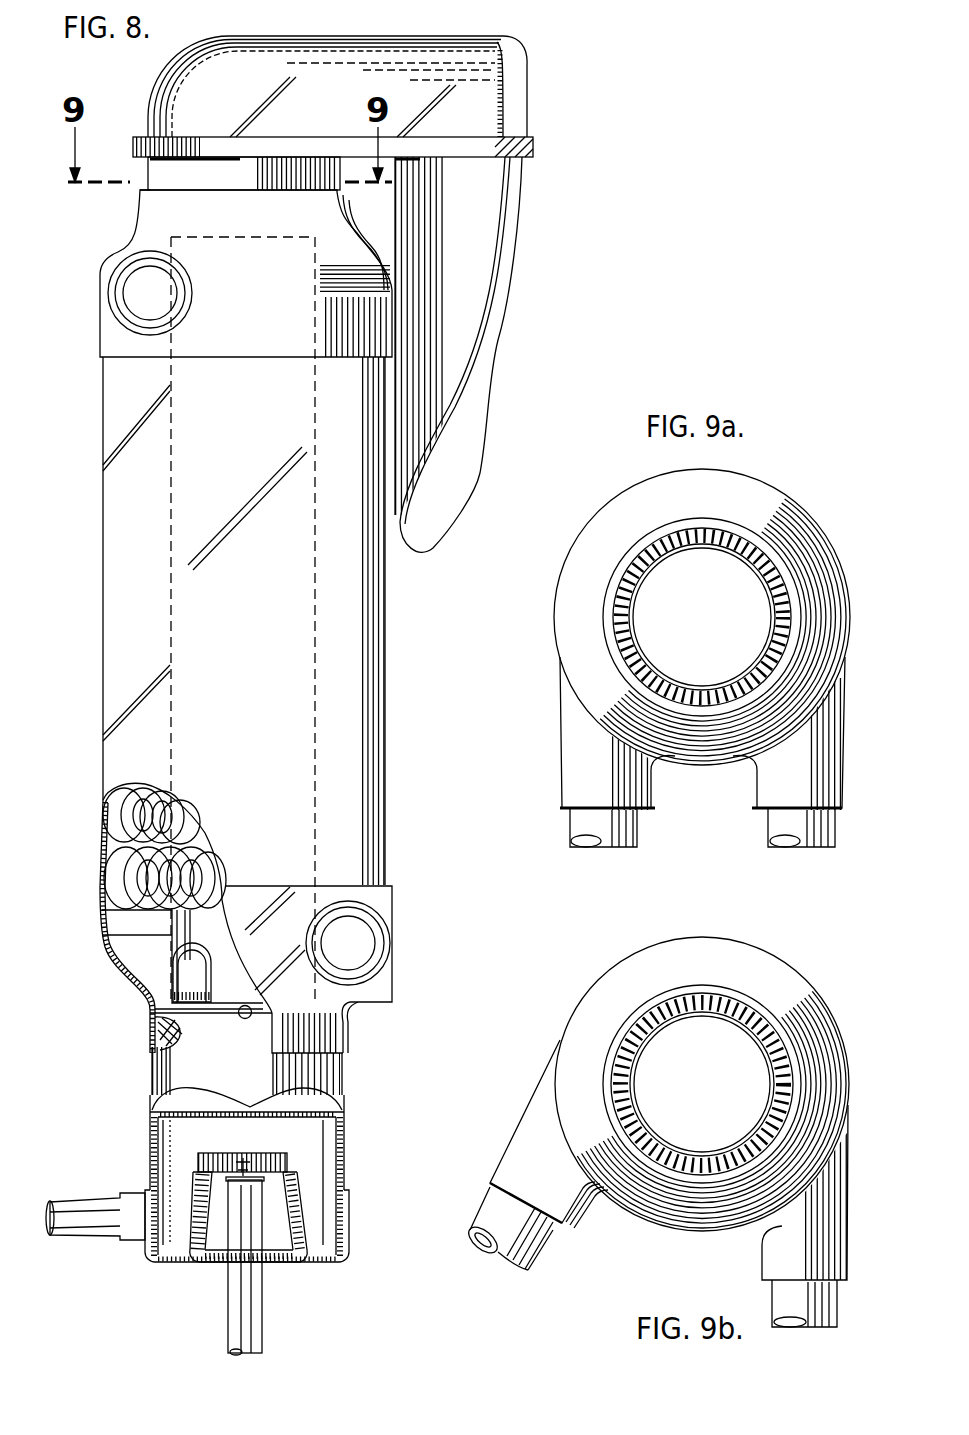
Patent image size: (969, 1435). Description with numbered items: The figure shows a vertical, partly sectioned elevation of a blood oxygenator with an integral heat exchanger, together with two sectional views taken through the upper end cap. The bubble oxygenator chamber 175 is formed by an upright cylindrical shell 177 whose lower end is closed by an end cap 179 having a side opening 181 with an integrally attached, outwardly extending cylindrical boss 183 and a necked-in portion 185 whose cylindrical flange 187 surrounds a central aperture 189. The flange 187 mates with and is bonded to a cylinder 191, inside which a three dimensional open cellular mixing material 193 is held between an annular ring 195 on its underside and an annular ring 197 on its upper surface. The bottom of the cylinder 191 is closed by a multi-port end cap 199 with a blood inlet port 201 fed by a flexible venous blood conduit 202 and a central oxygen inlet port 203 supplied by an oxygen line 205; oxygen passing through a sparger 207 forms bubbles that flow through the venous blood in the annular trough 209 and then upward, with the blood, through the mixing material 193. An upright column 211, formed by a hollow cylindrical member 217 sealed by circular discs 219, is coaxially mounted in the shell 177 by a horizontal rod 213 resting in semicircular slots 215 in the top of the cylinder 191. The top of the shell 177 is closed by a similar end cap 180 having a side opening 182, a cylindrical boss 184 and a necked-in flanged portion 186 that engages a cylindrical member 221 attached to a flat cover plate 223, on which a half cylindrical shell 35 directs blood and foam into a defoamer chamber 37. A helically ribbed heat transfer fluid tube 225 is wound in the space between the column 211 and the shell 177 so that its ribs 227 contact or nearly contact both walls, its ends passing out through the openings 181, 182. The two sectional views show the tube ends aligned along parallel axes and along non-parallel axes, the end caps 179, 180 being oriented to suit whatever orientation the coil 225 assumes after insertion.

In FIG. 8, the half cylindrical shell 35 is at (374, 36).
In FIG. 8, the defoamer chamber 37 is at (480, 362).
In FIG. 8, the bubble oxygenator chamber 175 is at (105, 862).
In FIG. 8, the cylindrical shell 177 is at (387, 672).
In FIG. 8, the end cap 179 is at (394, 906).
In FIG. 8, the end cap 180 is at (100, 322).
In FIG. 9a, the end cap 180 is at (560, 605).
In FIG. 9b, the end cap 180 is at (652, 940).
In FIG. 8, the side opening 181 is at (378, 942).
In FIG. 8, the side opening 182 is at (116, 295).
In FIG. 8, the cylindrical boss 183 is at (394, 950).
In FIG. 9a, the cylindrical boss 183 is at (842, 765).
In FIG. 9b, the cylindrical boss 183 is at (850, 1230).
In FIG. 8, the cylindrical boss 184 is at (118, 332).
In FIG. 9a, the cylindrical boss 184 is at (560, 765).
In FIG. 9b, the cylindrical boss 184 is at (508, 1147).
In FIG. 8, the necked-in portion 185 is at (346, 1000).
In FIG. 8, the necked-in flanged portion 186 is at (134, 244).
In FIG. 8, the cylindrical flange 187 is at (348, 1042).
In FIG. 8, the central aperture 189 is at (152, 1062).
In FIG. 8, the cylinder 191 is at (343, 1075).
In FIG. 8, the open cellular mixing material 193 is at (285, 1110).
In FIG. 8, the annular ring 195 is at (344, 1130).
In FIG. 8, the annular ring 197 is at (163, 1006).
In FIG. 8, the multi-port end cap 199 is at (350, 1250).
In FIG. 8, the blood inlet port 201 is at (158, 1220).
In FIG. 8, the flexible venous blood conduit 202 is at (100, 1243).
In FIG. 8, the oxygen inlet port 203 is at (240, 1160).
In FIG. 8, the oxygen line 205 is at (260, 1326).
In FIG. 8, the sparger 207 is at (291, 1156).
In FIG. 8, the annular trough 209 is at (322, 1240).
In FIG. 8, the upright column 211 is at (162, 936).
In FIG. 9a, the upright column 211 is at (720, 611).
In FIG. 9b, the upright column 211 is at (723, 1085).
In FIG. 8, the horizontal rod 213 is at (238, 1014).
In FIG. 8, the semicircular slots 215 is at (248, 1015).
In FIG. 8, the hollow cylindrical member 217 is at (128, 964).
In FIG. 8, the circular discs 219 is at (203, 968).
In FIG. 8, the cylindrical member 221 is at (147, 172).
In FIG. 9a, the cylindrical member 221 is at (612, 577).
In FIG. 9b, the cylindrical member 221 is at (637, 1017).
In FIG. 8, the flat cover plate 223 is at (330, 136).
In FIG. 8, the helically ribbed heat transfer fluid tube 225 is at (120, 918).
In FIG. 9a, the helically ribbed heat transfer fluid tube 225 is at (738, 553).
In FIG. 9b, the helically ribbed heat transfer fluid tube 225 is at (763, 1055).
In FIG. 8, the ribs 227 is at (120, 845).